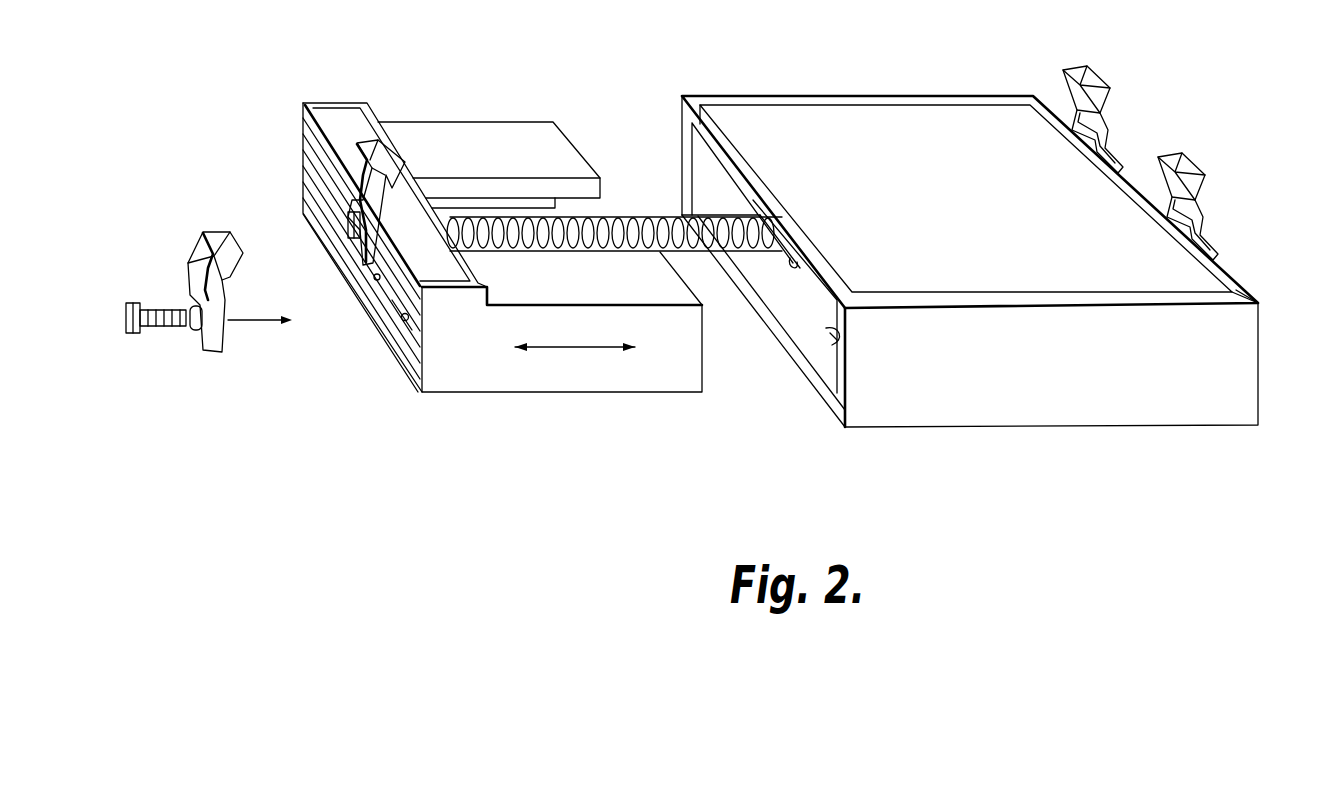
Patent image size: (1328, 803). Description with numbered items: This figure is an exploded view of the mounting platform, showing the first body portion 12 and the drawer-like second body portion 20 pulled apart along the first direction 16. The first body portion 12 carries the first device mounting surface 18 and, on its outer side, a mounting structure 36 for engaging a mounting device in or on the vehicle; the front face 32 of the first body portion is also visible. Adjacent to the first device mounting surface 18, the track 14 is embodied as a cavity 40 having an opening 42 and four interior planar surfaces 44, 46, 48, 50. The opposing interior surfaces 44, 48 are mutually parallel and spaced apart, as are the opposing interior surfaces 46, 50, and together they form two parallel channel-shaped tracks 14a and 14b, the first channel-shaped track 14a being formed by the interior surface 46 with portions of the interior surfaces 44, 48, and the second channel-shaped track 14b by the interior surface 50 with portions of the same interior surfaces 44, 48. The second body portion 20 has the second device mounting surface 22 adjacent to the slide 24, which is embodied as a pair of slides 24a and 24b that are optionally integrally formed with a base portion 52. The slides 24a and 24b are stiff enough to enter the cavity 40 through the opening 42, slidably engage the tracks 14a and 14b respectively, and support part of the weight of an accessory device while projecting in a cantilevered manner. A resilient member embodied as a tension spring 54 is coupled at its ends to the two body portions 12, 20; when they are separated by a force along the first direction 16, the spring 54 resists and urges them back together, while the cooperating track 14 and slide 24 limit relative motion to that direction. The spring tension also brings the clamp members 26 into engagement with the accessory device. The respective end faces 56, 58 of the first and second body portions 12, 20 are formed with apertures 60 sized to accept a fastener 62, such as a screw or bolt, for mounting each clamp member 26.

The first body portion 12 is at (1133, 447).
The track 14 is at (772, 265).
The first channel-shaped track 14a is at (812, 365).
The second channel-shaped track 14b is at (708, 179).
The first direction 16 is at (584, 349).
The first device mounting surface 18 is at (1237, 270).
The second body portion 20 is at (440, 437).
The second device mounting surface 22 is at (345, 102).
The slide 24 is at (574, 96).
The first slide 24a is at (596, 292).
The second slide 24b is at (501, 164).
The clamp members 26 is at (185, 263).
The front face of housing 32 is at (1102, 376).
The mounting structure 36 is at (852, 110).
The cavity 40 is at (810, 307).
The opening 42 is at (790, 320).
The interior planar surface 44 is at (822, 342).
The interior planar surface 46 is at (828, 340).
The interior planar surface 48 is at (795, 262).
The interior planar surface 50 is at (712, 162).
The base portion 52 is at (380, 318).
The spring 54 is at (690, 214).
The end face 56 is at (1254, 288).
The end face 58 is at (400, 317).
The apertures 60 is at (374, 277).
The fastener 62 is at (120, 315).